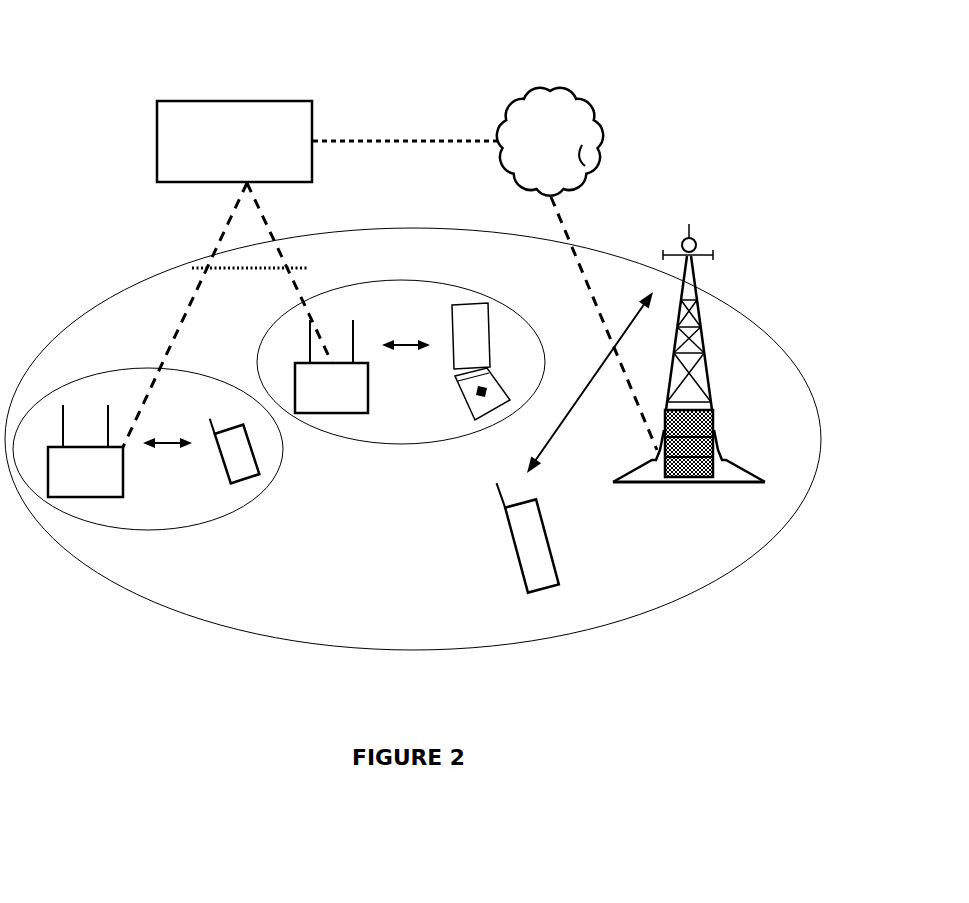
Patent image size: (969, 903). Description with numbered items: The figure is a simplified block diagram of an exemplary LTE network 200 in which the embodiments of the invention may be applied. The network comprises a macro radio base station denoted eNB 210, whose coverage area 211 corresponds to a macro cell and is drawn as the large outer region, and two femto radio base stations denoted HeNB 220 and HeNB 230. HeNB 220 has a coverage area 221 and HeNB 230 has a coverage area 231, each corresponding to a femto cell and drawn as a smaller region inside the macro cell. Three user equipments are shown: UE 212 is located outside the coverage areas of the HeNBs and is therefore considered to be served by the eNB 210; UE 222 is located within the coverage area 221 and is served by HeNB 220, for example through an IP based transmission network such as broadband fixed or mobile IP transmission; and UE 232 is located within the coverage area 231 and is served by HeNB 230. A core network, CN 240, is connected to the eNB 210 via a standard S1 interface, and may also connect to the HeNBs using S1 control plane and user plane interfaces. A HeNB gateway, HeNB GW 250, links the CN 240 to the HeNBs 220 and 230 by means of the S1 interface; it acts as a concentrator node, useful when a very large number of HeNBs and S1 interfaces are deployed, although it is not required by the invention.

The LTE network 200 is at (124, 40).
The HeNB gateway 250 is at (234, 100).
The core network 240 is at (593, 102).
The coverage area 211 is at (753, 320).
The eNB 210 is at (713, 423).
The user equipment 212 is at (518, 560).
The coverage area 231 is at (148, 367).
The HeNB 230 is at (68, 492).
The user equipment 232 is at (238, 478).
The coverage area 221 is at (447, 283).
The HeNB 220 is at (308, 413).
The user equipment 222 is at (470, 410).